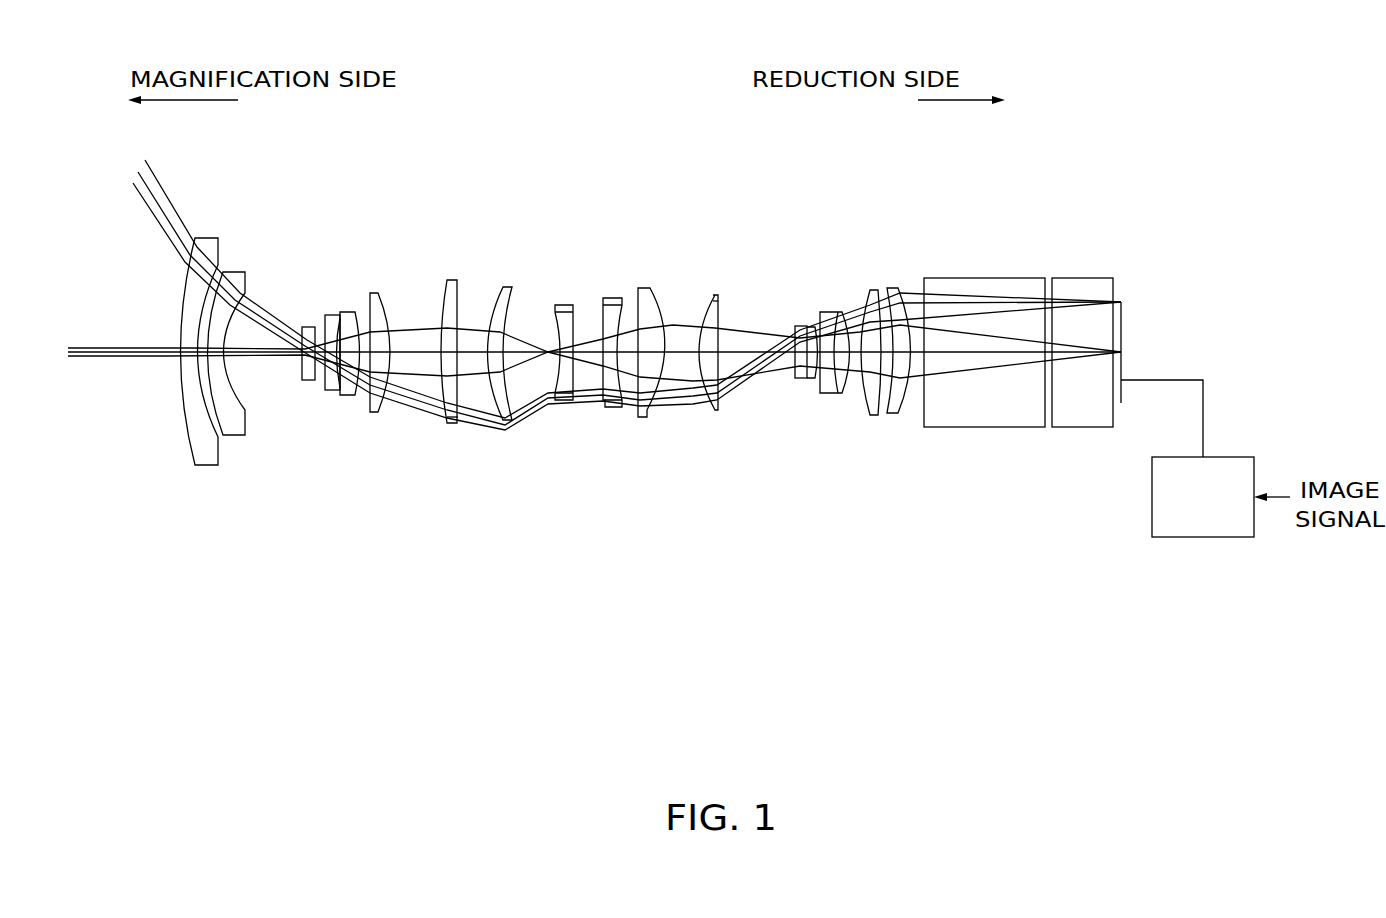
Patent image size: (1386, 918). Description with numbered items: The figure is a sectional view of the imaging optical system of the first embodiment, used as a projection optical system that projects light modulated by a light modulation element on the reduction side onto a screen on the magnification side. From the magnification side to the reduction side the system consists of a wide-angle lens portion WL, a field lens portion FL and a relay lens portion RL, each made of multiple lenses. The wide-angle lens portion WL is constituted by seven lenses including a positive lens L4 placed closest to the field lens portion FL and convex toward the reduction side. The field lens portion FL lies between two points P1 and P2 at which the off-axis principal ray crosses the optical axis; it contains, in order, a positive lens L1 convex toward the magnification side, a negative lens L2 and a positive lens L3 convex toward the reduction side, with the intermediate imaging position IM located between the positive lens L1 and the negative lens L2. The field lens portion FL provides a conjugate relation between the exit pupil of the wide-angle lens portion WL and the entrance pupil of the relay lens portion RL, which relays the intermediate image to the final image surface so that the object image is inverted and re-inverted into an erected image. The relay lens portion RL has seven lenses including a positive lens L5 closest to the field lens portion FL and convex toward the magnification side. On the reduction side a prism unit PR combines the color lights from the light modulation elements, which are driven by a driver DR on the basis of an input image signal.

The wide-angle lens portion WL is at (145, 508).
The point where off-axis principal ray intersects optical axis P1 is at (305, 335).
The positive lens (fourth lens) L4 is at (381, 318).
The magnification side positive lens (first lens) L1 is at (502, 290).
The intermediate imaging position IM is at (548, 333).
The field lens portion FL is at (428, 508).
The negative lens (second lens) L2 is at (557, 307).
The reduction side positive lens (third lens) L3 is at (640, 288).
The positive lens (fifth lens) L5 is at (713, 295).
The relay lens portion RL is at (685, 508).
The point where off-axis principal ray intersects optical axis P2 is at (783, 328).
The prism unit / image forming panel PR is at (918, 508).
The driver DR is at (1233, 457).